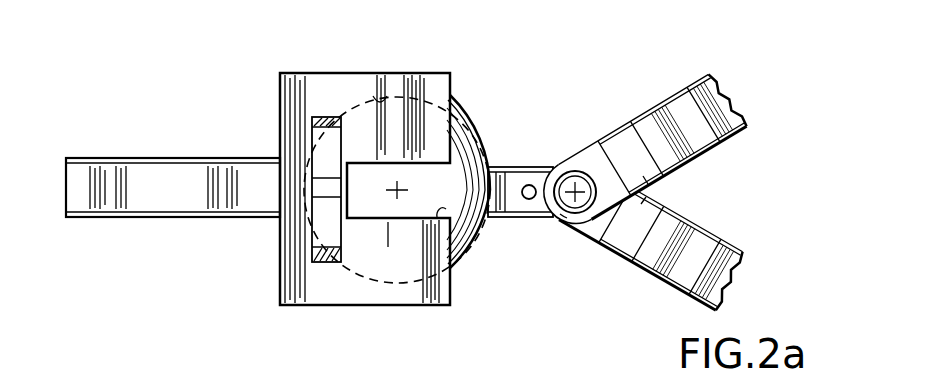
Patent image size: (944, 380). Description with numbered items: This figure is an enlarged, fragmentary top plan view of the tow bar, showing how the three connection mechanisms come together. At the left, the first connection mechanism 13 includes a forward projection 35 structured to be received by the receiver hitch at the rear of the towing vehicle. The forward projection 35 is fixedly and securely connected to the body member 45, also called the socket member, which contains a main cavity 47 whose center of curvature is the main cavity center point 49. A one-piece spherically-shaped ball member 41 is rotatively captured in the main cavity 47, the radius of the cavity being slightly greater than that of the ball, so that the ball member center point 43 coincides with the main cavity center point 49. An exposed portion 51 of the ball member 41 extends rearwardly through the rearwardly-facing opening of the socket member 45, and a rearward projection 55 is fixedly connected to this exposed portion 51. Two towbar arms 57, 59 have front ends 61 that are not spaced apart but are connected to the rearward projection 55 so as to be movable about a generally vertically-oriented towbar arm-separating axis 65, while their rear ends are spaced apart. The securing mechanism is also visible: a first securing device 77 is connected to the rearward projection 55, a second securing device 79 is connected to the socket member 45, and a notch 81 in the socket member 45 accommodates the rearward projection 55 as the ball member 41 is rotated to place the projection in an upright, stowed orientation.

The first connection mechanism 13 is at (92, 156).
The forward projection 35 is at (153, 172).
The body member 45 is at (270, 93).
The second securing device 79 is at (323, 155).
The main cavity 47 is at (365, 100).
The ball member center point 43 is at (398, 190).
The main cavity center point 49 is at (398, 190).
The ball member 41 is at (476, 114).
The exposed portion 51 is at (481, 147).
The first securing device 77 is at (530, 185).
The rearward projection 55 is at (540, 177).
The towbar arm 57 is at (702, 140).
The towbar arm 59 is at (720, 260).
The front end 61 is at (642, 203).
The towbar arm-separating axis 65 is at (567, 218).
The notch 81 is at (446, 209).